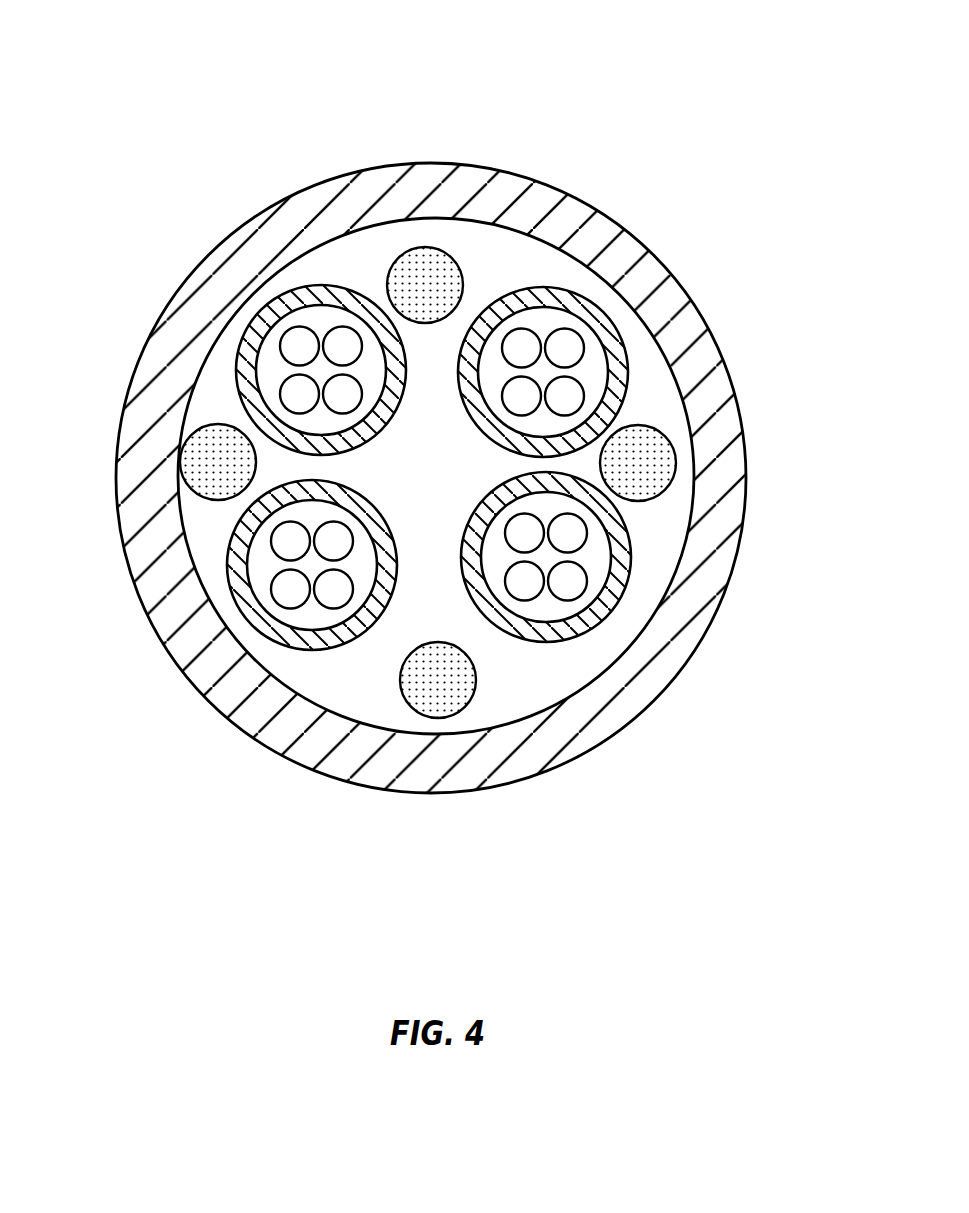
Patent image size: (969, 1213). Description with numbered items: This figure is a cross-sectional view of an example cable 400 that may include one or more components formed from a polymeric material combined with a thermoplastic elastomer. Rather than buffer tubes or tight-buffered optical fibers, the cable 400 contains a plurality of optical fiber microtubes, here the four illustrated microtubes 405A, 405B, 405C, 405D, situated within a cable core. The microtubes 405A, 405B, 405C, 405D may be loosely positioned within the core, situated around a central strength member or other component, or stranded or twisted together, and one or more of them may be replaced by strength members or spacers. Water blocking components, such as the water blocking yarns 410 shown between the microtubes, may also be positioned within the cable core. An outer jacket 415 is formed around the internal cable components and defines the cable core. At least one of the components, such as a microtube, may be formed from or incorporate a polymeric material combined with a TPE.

The cable 400 is at (441, 473).
The optical fiber microtube 405A is at (295, 288).
The optical fiber microtube 405B is at (627, 343).
The optical fiber microtube 405C is at (626, 602).
The optical fiber microtube 405D is at (224, 568).
The water blocking yarns 410 is at (425, 282).
The outer jacket 415 is at (473, 200).